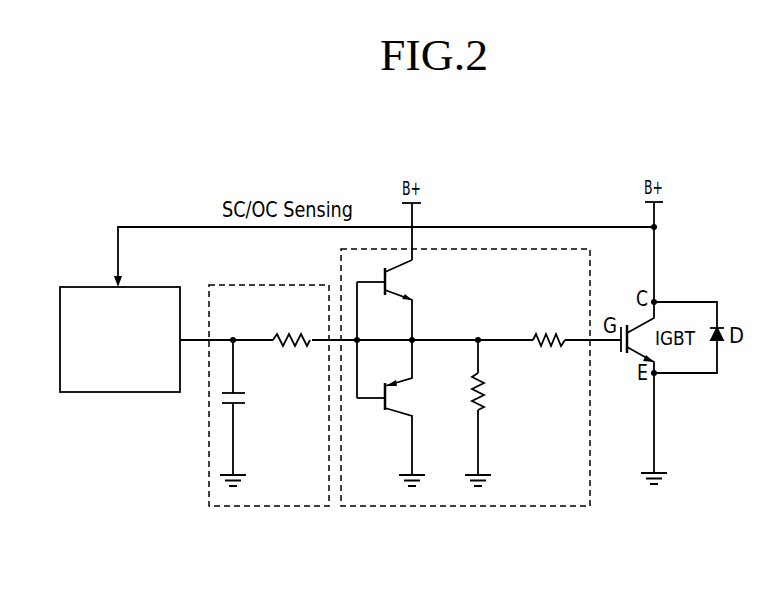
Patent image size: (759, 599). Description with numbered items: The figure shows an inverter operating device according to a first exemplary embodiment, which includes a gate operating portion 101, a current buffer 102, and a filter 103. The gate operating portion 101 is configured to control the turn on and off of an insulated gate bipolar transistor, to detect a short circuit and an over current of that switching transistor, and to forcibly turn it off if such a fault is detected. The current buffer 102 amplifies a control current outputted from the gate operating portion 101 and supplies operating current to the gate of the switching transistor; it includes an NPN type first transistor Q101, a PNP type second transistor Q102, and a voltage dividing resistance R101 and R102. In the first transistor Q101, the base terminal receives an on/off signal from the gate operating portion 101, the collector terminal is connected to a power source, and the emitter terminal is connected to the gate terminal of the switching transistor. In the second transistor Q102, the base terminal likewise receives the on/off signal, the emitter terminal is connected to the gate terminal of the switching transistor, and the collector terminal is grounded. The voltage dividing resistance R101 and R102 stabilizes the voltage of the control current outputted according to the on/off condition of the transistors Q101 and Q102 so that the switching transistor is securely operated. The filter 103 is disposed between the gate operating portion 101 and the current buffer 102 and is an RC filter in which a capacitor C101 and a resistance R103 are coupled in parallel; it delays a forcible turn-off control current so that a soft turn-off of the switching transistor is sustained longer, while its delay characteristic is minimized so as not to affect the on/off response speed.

The gate operating portion 101 is at (60, 340).
The current buffer 102 is at (465, 403).
The filter 103 is at (269, 421).
The voltage dividing resistance R101 is at (499, 413).
The voltage dividing resistance R102 is at (549, 325).
The resistance R103 is at (293, 325).
The capacitor C101 is at (258, 413).
The NPN type first transistor Q101 is at (404, 300).
The PNP type second transistor Q102 is at (404, 413).